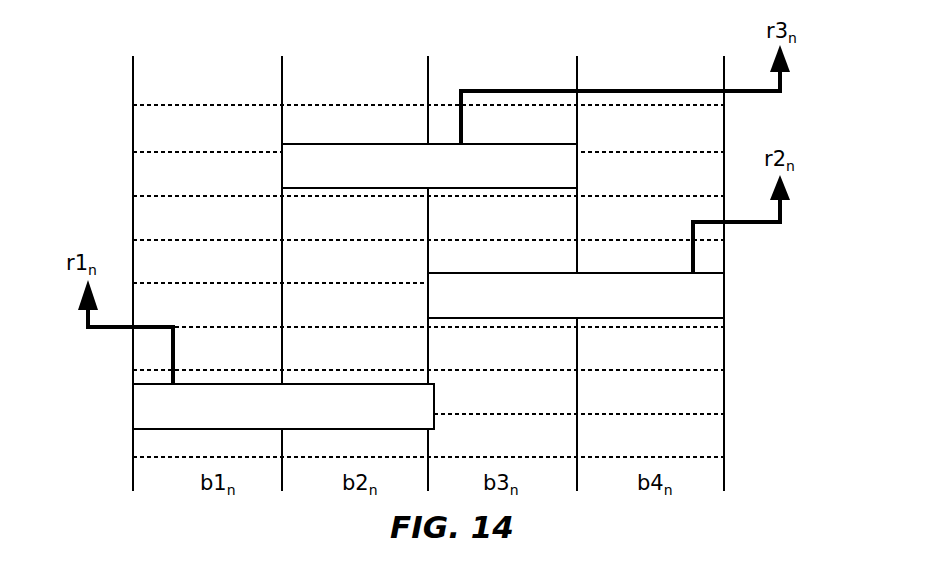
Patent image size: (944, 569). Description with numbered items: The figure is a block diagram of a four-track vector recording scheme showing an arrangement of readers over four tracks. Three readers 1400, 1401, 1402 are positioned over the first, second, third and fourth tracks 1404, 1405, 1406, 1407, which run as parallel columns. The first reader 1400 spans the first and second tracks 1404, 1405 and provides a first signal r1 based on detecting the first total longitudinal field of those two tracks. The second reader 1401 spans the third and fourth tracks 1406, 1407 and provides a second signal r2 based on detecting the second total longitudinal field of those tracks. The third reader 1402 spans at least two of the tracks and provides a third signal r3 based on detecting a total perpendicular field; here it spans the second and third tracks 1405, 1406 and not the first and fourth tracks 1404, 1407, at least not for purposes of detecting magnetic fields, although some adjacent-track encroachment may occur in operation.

The first reader 1400 is at (136, 413).
The second reader 1401 is at (430, 306).
The third reader 1402 is at (284, 175).
The first track 1404 is at (197, 69).
The second track 1405 is at (345, 69).
The third track 1406 is at (485, 69).
The fourth track 1407 is at (633, 69).